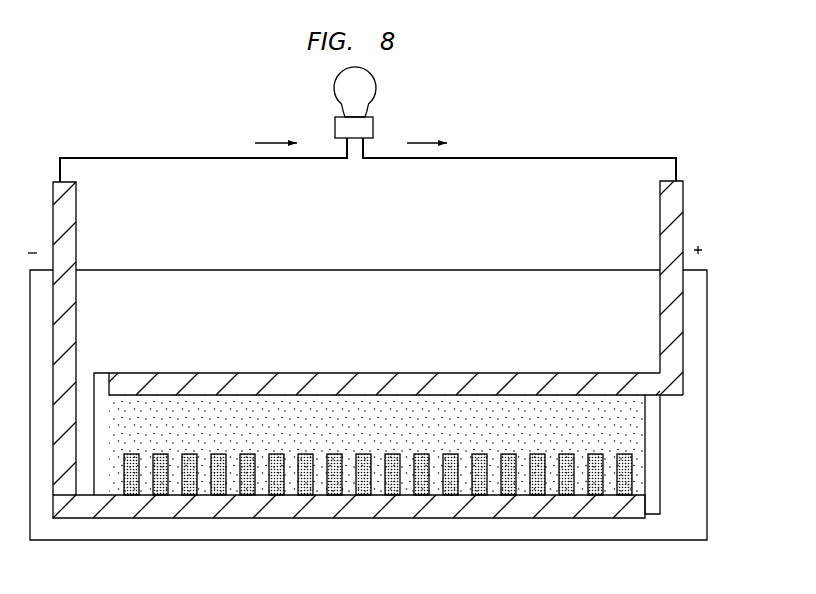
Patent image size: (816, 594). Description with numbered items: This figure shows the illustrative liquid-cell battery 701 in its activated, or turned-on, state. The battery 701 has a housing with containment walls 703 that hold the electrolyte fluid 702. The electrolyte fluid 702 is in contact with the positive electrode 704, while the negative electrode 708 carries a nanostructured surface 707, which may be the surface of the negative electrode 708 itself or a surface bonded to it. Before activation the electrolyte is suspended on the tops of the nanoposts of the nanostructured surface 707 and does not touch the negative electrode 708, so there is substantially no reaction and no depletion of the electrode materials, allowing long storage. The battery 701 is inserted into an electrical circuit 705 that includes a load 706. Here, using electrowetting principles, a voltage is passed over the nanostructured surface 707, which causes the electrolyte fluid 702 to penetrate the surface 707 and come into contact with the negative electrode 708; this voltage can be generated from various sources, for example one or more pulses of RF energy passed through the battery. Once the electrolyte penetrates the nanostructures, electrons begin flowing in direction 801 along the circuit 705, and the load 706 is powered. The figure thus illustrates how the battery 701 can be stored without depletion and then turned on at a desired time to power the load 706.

The battery 701 is at (708, 324).
The electrolyte fluid 702 is at (518, 396).
The containment walls 703 is at (103, 373).
The positive electrode 704 is at (684, 214).
The electrical circuit 705 is at (484, 158).
The load 706 is at (373, 84).
The nanostructured surface 707 is at (366, 497).
The negative electrode 708 is at (78, 223).
The direction 801 is at (265, 141).